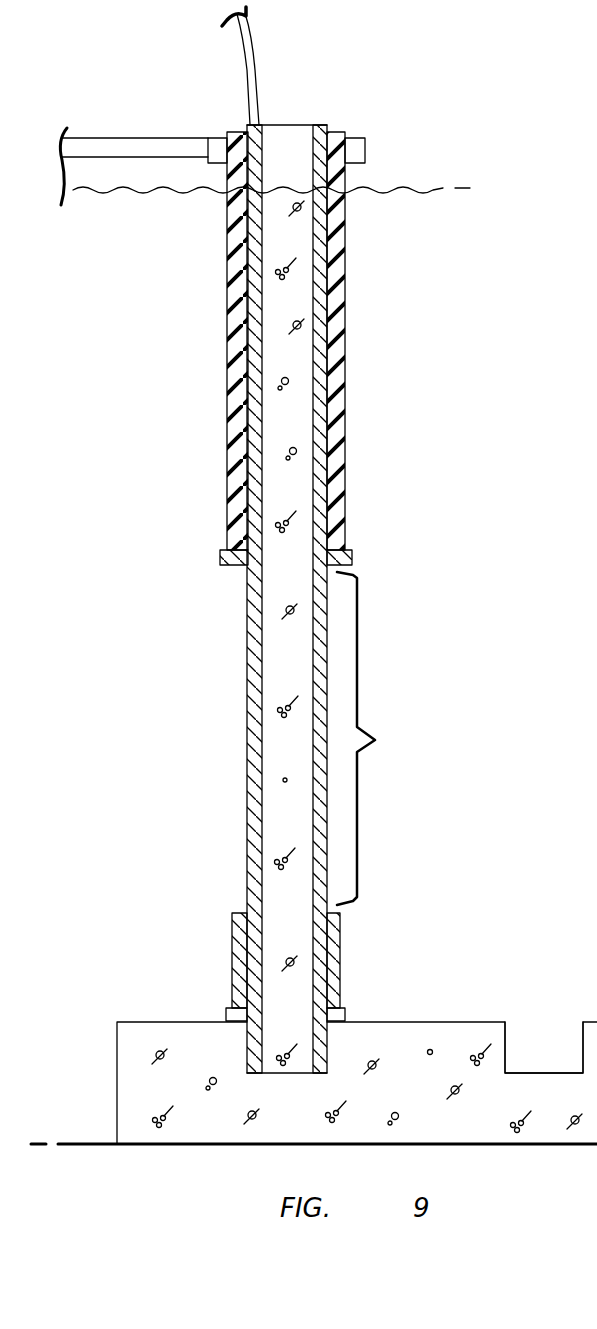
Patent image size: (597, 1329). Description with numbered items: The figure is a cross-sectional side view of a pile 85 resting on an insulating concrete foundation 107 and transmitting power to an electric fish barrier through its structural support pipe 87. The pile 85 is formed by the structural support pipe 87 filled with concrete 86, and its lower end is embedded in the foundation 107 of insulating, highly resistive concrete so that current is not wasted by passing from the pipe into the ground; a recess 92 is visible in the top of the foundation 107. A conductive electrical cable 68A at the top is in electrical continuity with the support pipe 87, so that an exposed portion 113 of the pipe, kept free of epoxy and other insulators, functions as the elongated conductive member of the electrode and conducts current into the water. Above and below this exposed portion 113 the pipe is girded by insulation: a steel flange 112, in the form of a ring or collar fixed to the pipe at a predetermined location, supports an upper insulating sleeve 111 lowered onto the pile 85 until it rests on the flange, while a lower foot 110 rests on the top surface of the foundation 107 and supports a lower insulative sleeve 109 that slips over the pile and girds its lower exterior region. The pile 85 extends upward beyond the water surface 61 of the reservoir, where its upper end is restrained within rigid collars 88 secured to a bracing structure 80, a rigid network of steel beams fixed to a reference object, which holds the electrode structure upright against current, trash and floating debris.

The liquid surface level 61 is at (410, 188).
The conductive electrical cable 68A is at (252, 40).
The bracing structure 80 is at (100, 138).
The pile 85 is at (204, 599).
The concrete 86 is at (275, 860).
The structural support pipe 87 is at (247, 882).
The rigid collar 88 is at (220, 140).
The notch in base 92 is at (540, 1073).
The foundation 107 is at (398, 1021).
The lower insulative sleeve 109 is at (236, 938).
The lower foot 110 is at (240, 1012).
The upper insulating sleeve 111 is at (237, 496).
The steel flange 112 is at (236, 566).
The exposed portion of support pipe 113 is at (384, 738).